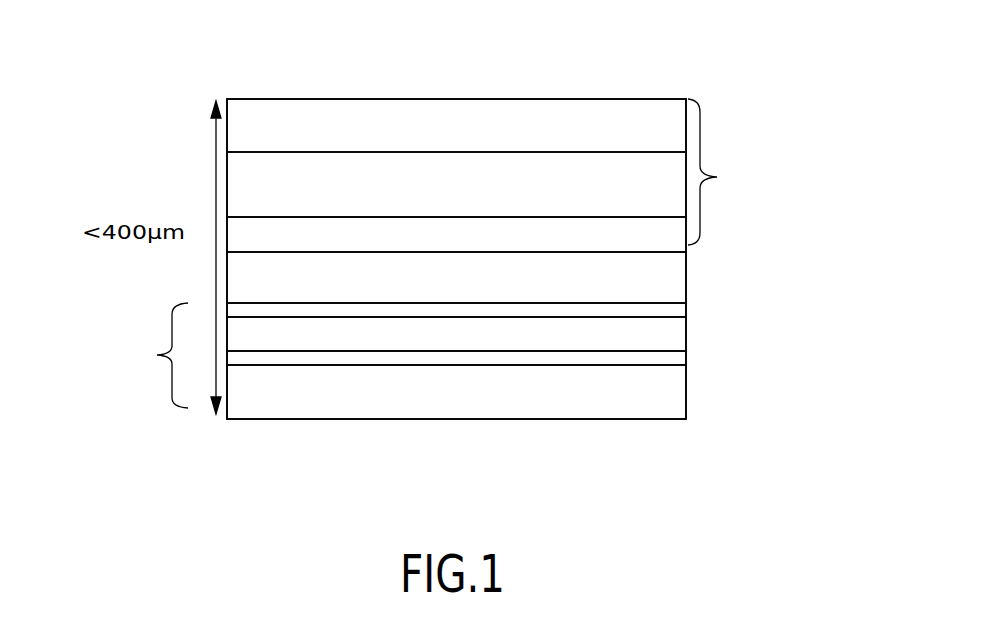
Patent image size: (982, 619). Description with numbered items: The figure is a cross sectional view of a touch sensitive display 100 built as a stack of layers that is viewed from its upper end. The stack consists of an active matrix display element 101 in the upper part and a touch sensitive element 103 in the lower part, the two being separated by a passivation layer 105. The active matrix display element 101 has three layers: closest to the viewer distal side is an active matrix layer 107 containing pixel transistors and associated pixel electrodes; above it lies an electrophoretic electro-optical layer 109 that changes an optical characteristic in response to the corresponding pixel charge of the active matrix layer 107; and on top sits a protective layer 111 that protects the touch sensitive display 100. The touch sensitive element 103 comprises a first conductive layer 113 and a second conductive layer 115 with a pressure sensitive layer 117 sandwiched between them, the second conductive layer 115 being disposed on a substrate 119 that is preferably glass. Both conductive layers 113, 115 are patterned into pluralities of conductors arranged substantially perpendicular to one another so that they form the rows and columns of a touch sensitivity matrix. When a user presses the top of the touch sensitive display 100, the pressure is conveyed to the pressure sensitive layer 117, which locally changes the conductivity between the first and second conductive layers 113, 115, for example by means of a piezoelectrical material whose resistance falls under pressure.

The touch sensitive display 100 is at (906, 475).
The active matrix display element 101 is at (727, 177).
The touch sensitive element 103 is at (140, 350).
The passivation layer 105 is at (670, 272).
The active matrix layer 107 is at (237, 233).
The electrophoretic electro-optical layer 109 is at (238, 174).
The protective layer 111 is at (392, 112).
The first conductive layer 113 is at (688, 310).
The second conductive layer 115 is at (688, 366).
The pressure sensitive layer 117 is at (673, 329).
The substrate 119 is at (672, 403).